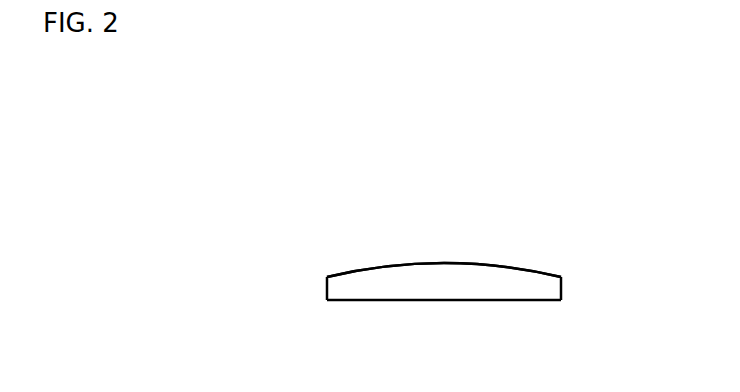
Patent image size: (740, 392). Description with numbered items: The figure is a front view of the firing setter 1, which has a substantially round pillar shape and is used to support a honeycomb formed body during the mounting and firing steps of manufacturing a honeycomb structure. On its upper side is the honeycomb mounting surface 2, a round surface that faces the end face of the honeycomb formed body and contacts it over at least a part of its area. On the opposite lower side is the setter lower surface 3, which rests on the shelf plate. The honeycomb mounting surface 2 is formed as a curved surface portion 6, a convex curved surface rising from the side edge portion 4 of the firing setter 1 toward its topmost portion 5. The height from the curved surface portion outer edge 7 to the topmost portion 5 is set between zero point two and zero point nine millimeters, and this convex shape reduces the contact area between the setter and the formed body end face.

The firing setter 1 is at (326, 187).
The honeycomb mounting surface 2 is at (531, 283).
The setter lower surface 3 is at (447, 300).
The side edge portion 4 is at (327, 280).
The topmost portion 5 is at (444, 263).
The curved surface portion 6 is at (444, 270).
The curved surface portion outer edge 7 is at (562, 277).